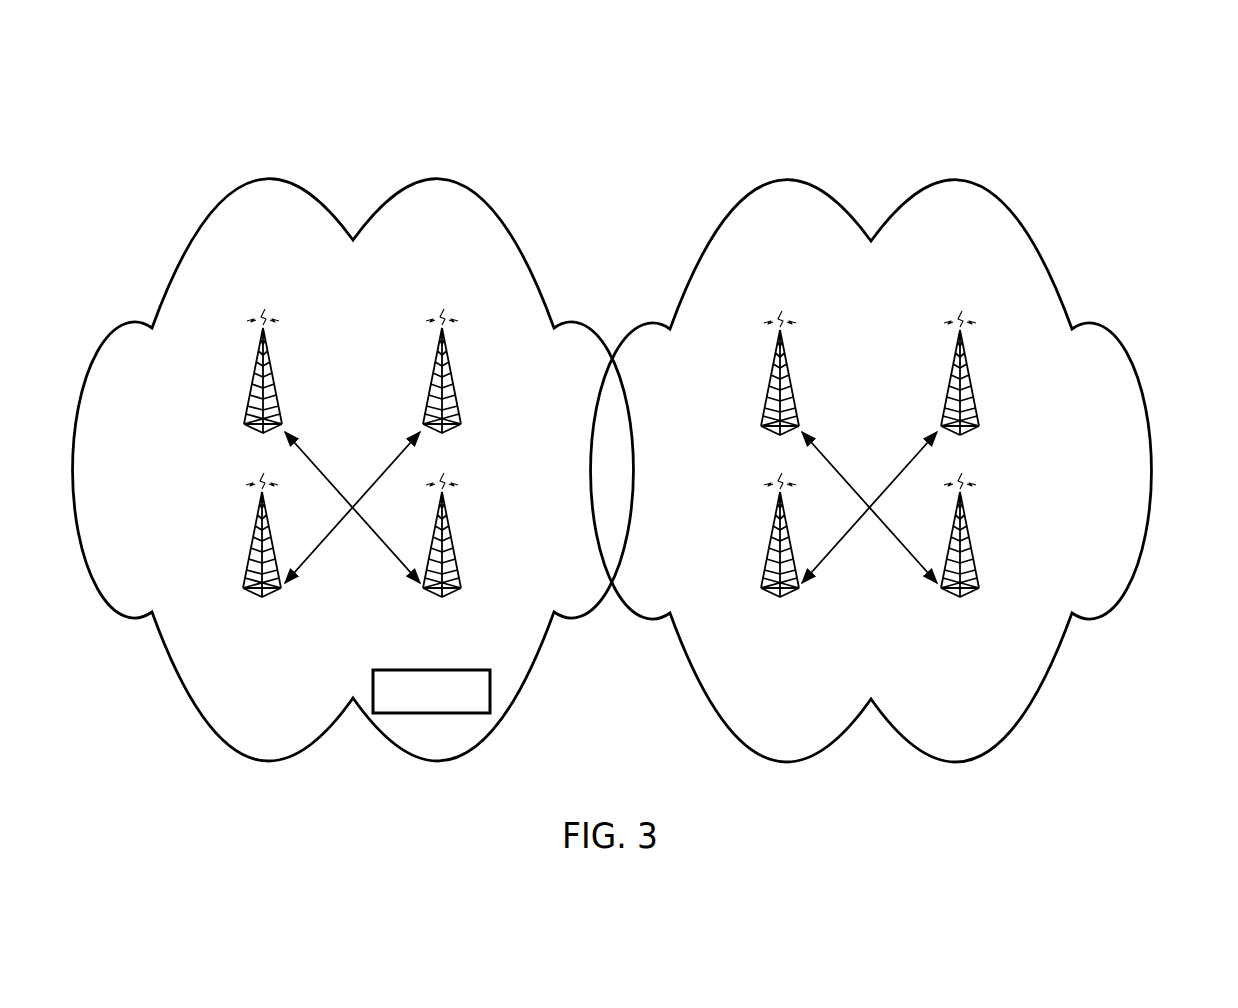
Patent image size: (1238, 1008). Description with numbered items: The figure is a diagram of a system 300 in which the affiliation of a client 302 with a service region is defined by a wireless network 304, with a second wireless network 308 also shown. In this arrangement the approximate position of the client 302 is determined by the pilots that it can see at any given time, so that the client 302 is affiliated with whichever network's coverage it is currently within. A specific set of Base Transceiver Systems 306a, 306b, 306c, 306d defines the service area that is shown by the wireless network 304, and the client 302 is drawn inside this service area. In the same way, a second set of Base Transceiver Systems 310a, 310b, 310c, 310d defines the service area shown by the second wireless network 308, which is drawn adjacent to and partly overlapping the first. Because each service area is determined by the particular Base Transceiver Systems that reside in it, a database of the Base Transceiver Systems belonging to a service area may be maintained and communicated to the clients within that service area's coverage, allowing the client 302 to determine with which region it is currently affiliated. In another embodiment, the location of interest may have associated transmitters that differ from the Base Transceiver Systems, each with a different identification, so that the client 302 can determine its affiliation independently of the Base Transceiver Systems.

The system 300 is at (1150, 128).
The client 302 is at (418, 670).
The wireless network 304 is at (440, 178).
The Base Transceiver System 306a is at (255, 384).
The Base Transceiver System 306b is at (450, 384).
The Base Transceiver System 306c is at (254, 540).
The Base Transceiver System 306d is at (450, 540).
The second wireless network 308 is at (956, 182).
The Base Transceiver System 310a is at (772, 388).
The Base Transceiver System 310b is at (968, 388).
The Base Transceiver System 310c is at (772, 545).
The Base Transceiver System 310d is at (968, 545).